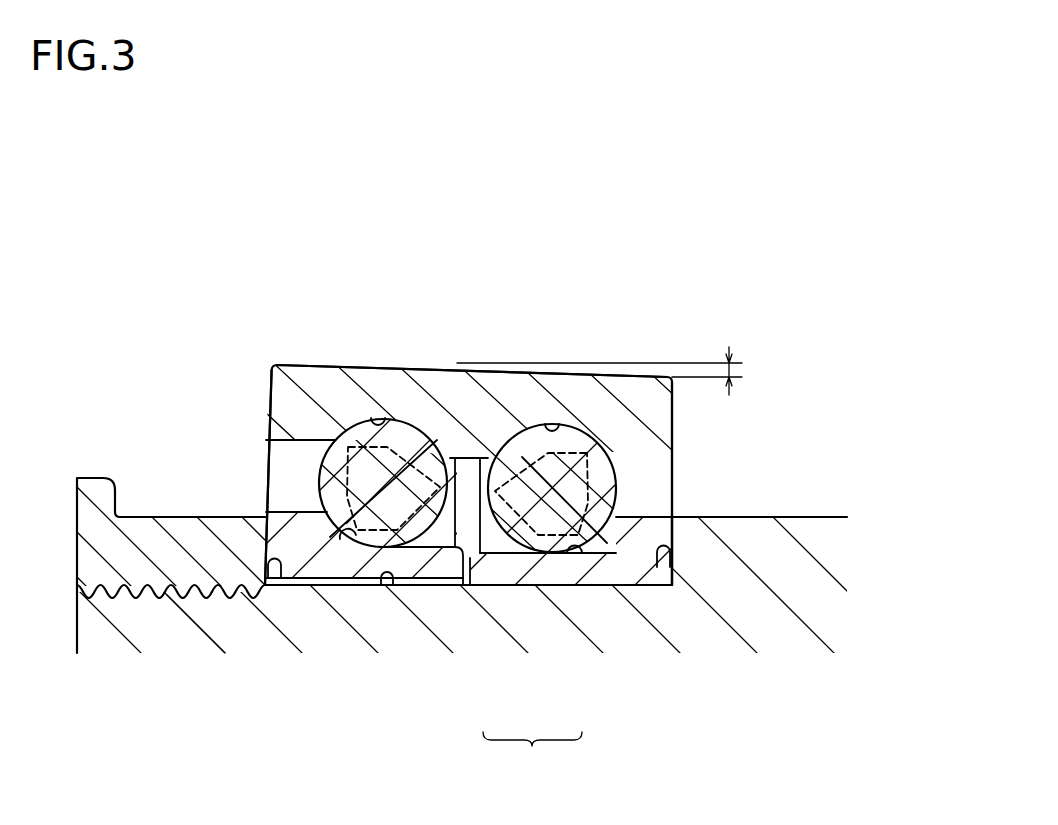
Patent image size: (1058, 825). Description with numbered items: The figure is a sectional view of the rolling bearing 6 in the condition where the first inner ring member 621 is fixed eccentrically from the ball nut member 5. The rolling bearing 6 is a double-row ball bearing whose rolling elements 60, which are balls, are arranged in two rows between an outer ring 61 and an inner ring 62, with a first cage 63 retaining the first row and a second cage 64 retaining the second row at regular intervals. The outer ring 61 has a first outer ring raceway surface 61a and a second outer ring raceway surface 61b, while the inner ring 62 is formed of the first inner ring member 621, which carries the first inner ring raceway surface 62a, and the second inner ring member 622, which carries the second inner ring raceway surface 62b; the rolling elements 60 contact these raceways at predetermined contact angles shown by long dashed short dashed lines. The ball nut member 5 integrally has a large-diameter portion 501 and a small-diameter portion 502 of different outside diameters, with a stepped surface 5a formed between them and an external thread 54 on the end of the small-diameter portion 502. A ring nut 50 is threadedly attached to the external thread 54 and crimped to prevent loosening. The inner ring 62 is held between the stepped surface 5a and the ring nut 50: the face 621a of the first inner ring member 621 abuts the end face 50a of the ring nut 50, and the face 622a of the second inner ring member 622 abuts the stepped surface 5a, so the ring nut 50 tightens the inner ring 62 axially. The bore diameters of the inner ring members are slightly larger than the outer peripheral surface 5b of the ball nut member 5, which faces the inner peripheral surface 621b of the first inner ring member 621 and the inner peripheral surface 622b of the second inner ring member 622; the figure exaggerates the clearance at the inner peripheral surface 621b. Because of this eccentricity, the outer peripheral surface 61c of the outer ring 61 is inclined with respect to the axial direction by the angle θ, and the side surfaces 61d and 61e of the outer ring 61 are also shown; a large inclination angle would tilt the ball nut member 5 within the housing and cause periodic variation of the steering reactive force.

The ball nut member 5 is at (77, 612).
The stepped surface 5a is at (668, 563).
The outer peripheral surface 5b is at (394, 586).
The rolling bearing 6 is at (256, 352).
The ring nut 50 is at (92, 485).
The end face 50a is at (282, 545).
The external thread 54 is at (148, 596).
The rolling elements 60 is at (320, 483).
The outer ring 61 is at (462, 385).
The first outer ring raceway surface 61a is at (375, 418).
The second outer ring raceway surface 61b is at (551, 425).
The outer peripheral surface 61c is at (543, 372).
The left side surface of upper member 61d is at (267, 390).
The right side surface of upper member 61e is at (673, 417).
The inner ring 62 is at (424, 678).
The first inner ring raceway surface 62a is at (351, 538).
The second inner ring raceway surface 62b is at (577, 553).
The first cage 63 is at (455, 458).
The second cage 64 is at (487, 490).
The large-diameter portion 501 is at (822, 550).
The small-diameter portion 502 is at (200, 640).
The first inner ring member 621 is at (452, 568).
The face 621a is at (264, 545).
The inner peripheral surface 621b is at (432, 580).
The second inner ring member 622 is at (493, 572).
The face 622a is at (673, 523).
The inner peripheral surface 622b is at (633, 586).